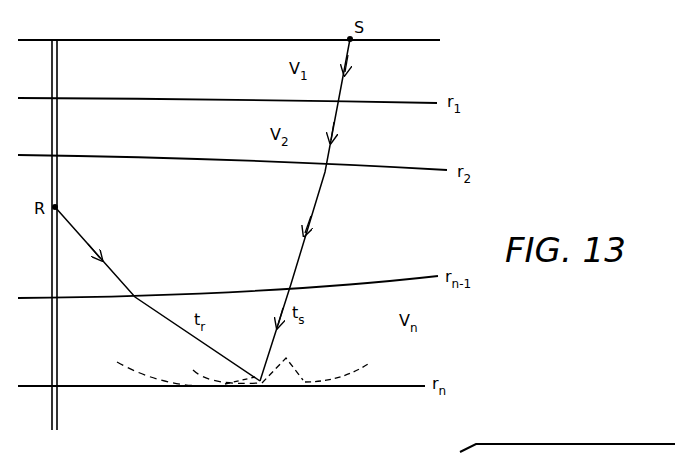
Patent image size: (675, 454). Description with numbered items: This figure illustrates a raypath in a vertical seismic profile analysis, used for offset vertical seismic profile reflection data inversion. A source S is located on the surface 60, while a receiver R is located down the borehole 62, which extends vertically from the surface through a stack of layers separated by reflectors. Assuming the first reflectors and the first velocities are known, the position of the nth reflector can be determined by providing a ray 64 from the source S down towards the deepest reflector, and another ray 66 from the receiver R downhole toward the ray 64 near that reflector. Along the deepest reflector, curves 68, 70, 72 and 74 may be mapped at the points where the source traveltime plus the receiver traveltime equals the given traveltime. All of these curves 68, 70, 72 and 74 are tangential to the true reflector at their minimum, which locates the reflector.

The surface 60 is at (307, 37).
The borehole 62 is at (60, 80).
The ray 64 is at (313, 218).
The ray 66 is at (232, 354).
The curve 68 is at (141, 376).
The curve 70 is at (213, 370).
The curve 72 is at (303, 378).
The curve 74 is at (349, 378).